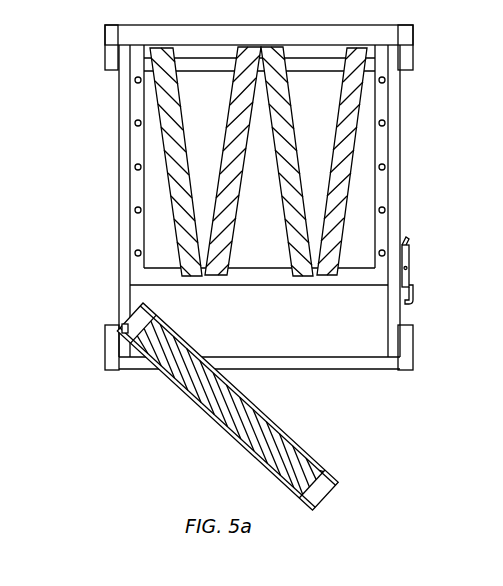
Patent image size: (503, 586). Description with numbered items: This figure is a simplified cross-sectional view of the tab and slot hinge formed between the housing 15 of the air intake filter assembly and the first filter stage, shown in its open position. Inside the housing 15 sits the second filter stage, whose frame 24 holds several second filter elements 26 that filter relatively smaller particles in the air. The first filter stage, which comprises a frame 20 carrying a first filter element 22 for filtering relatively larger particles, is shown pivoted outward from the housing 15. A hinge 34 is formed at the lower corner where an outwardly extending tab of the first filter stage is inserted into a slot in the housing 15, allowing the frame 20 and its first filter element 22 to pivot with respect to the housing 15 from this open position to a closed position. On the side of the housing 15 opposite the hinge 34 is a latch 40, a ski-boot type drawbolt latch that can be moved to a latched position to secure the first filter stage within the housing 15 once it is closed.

The housing 15 is at (118, 116).
The frame 20 is at (310, 458).
The first filter element 22 is at (250, 428).
The frame 24 is at (385, 108).
The second filter elements 26 is at (360, 208).
The hinge 34 is at (110, 306).
The latch 40 is at (408, 262).